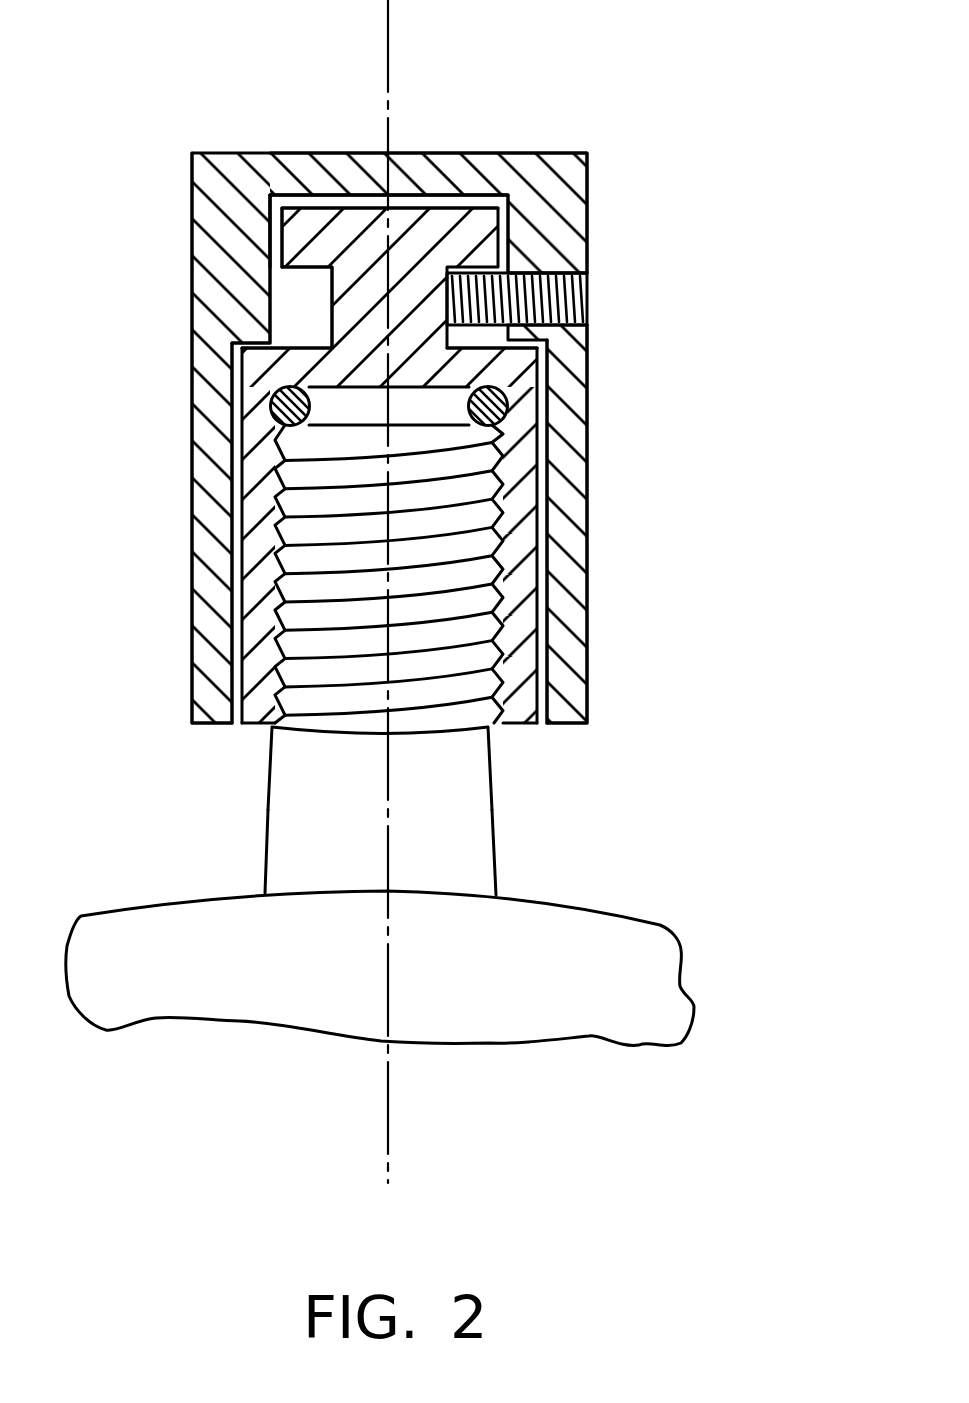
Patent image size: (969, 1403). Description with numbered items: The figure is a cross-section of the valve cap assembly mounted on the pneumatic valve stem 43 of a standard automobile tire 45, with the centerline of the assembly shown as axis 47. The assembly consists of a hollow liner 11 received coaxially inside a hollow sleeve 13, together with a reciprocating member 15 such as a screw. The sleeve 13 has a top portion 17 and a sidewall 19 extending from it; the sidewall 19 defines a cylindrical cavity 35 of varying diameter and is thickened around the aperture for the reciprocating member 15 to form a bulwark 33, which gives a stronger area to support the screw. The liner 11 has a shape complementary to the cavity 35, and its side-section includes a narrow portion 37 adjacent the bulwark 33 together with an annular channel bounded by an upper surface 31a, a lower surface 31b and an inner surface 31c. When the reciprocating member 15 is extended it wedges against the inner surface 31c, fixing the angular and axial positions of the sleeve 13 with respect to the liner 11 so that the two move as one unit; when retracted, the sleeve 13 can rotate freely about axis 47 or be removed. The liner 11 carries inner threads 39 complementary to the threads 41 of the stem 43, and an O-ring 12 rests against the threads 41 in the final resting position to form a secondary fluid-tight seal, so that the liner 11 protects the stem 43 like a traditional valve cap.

The hollow liner 11 is at (253, 425).
The O-ring 12 is at (506, 412).
The hollow sleeve 13 is at (192, 170).
The reciprocating member 15 is at (515, 292).
The top portion 17 is at (532, 165).
The sidewall 19 is at (570, 470).
The upper surface 31a is at (297, 283).
The lower surface 31b is at (310, 345).
The inner surface 31c is at (330, 307).
The bulwark 33 is at (215, 237).
The cylindrical cavity 35 is at (274, 197).
The narrow portion 37 is at (308, 223).
The inner threads 39 is at (280, 543).
The threads 41 is at (322, 726).
The stem 43 is at (290, 835).
The automobile tire 45 is at (126, 930).
The axis 47 is at (392, 20).